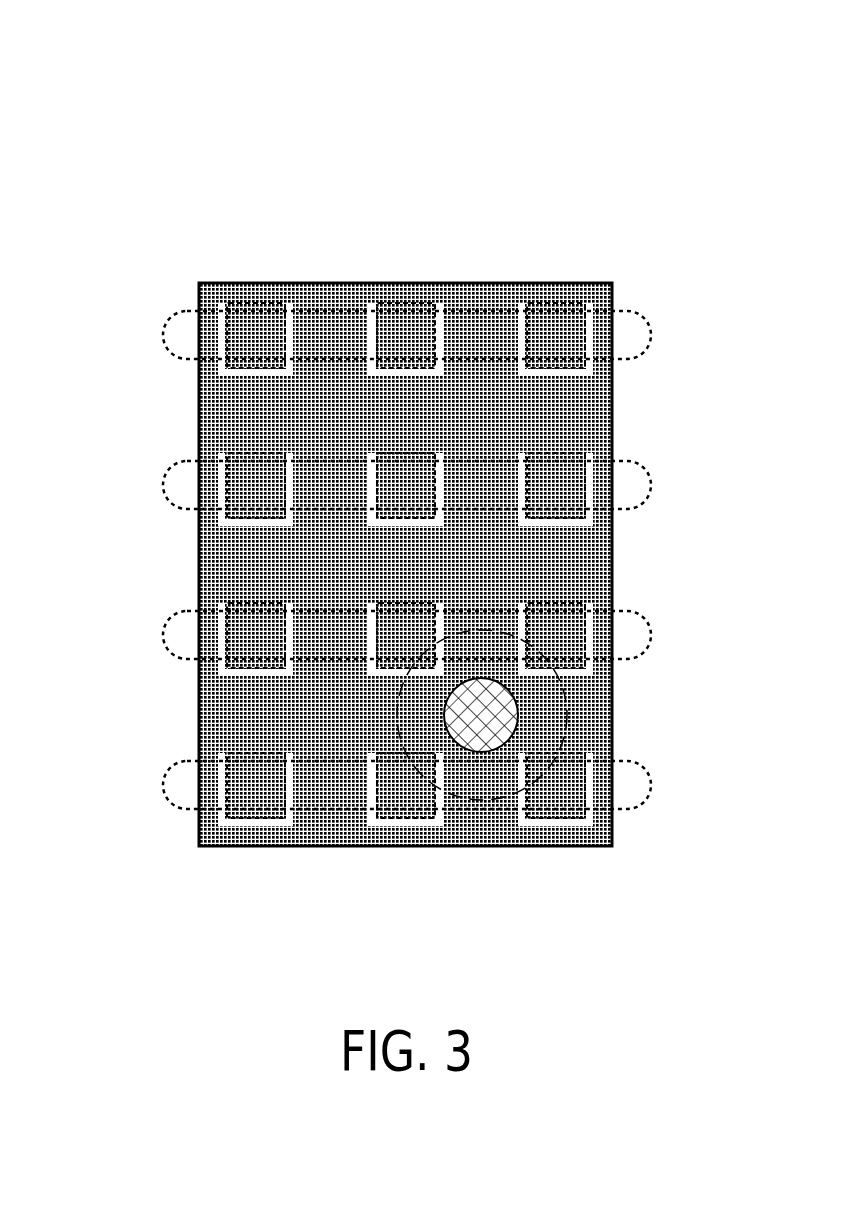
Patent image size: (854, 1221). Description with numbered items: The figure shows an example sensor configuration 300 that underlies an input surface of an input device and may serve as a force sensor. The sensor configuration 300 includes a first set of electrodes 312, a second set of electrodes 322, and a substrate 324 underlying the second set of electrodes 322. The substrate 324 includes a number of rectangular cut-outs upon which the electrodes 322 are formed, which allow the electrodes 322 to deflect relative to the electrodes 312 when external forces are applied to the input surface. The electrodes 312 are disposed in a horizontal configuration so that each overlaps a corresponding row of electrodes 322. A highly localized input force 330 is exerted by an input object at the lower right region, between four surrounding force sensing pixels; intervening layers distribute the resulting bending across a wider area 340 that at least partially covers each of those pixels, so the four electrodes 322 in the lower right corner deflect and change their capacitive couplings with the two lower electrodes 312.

The sensor configuration 300 is at (204, 60).
The first set of electrodes 312 is at (152, 330).
The second set of electrodes 322 is at (405, 564).
The substrate 324 is at (662, 416).
The input force 330 is at (507, 705).
The wider area 340 is at (478, 792).